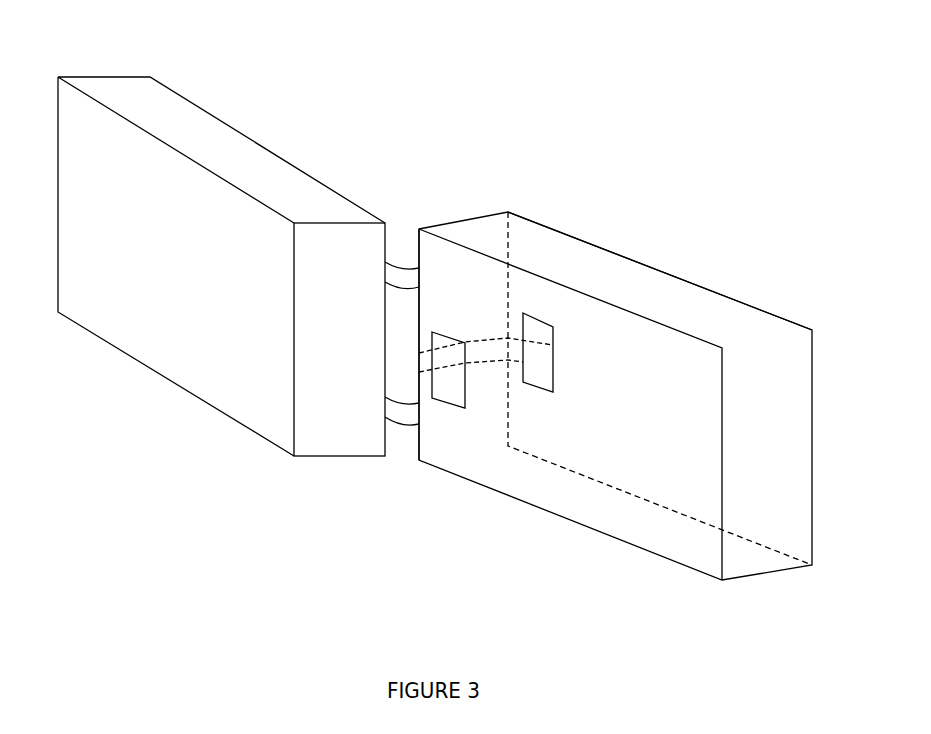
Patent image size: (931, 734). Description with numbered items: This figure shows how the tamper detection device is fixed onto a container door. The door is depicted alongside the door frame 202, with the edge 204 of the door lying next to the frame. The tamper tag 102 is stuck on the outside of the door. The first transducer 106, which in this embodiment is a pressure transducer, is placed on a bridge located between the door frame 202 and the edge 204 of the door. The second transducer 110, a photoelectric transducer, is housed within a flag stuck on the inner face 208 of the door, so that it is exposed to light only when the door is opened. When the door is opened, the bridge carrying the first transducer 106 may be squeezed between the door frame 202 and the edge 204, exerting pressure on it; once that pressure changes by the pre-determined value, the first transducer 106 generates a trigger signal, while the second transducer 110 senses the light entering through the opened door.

The door frame 202 is at (166, 379).
The edge of the door 204 is at (488, 218).
The inner face of the container door 208 is at (650, 264).
The tamper tag 102 is at (448, 408).
The first transducer 106 is at (483, 366).
The second transducer 110 is at (535, 389).